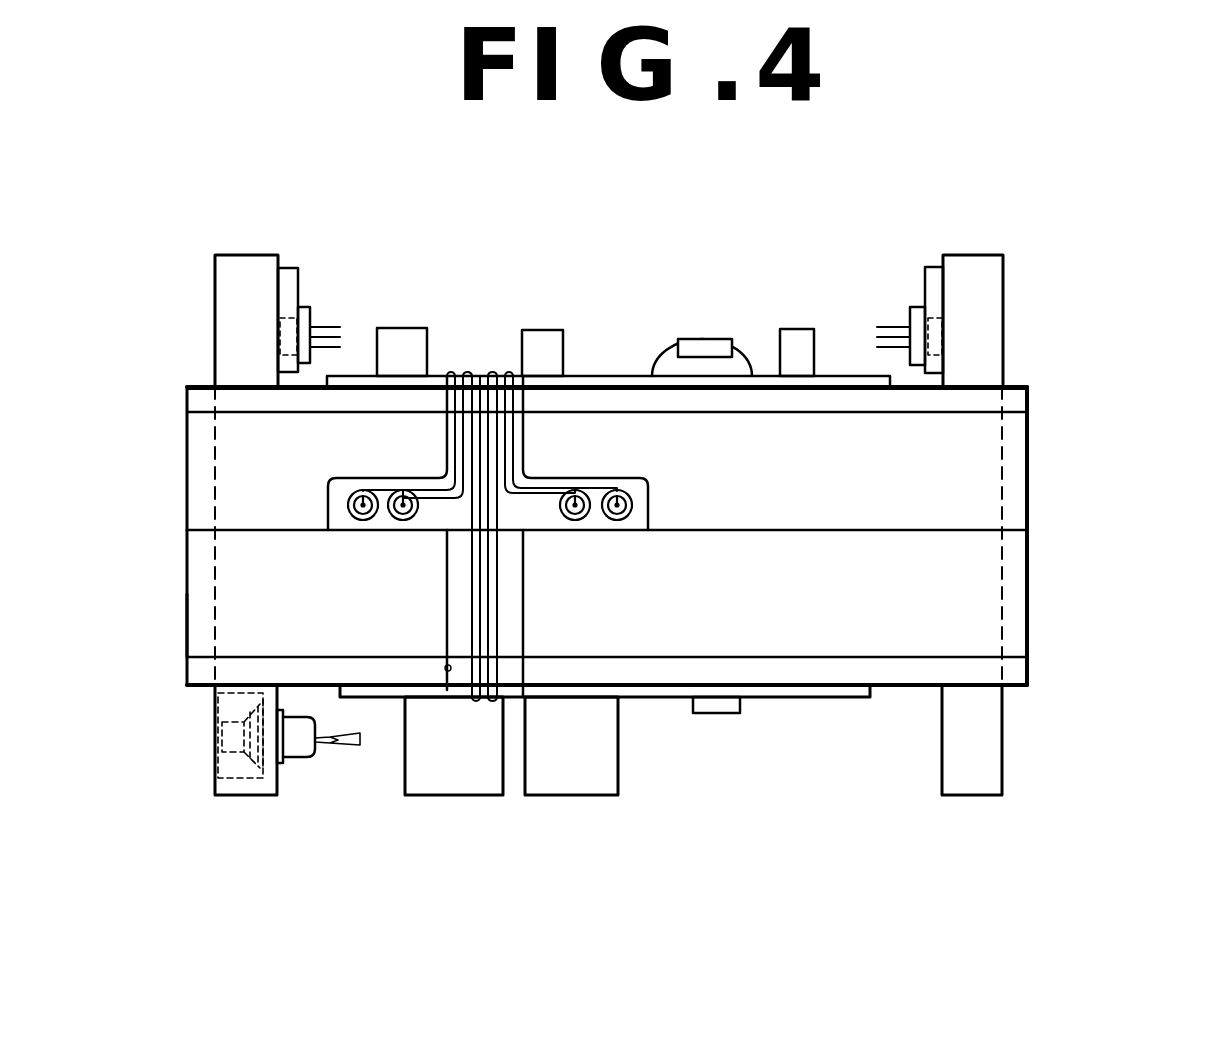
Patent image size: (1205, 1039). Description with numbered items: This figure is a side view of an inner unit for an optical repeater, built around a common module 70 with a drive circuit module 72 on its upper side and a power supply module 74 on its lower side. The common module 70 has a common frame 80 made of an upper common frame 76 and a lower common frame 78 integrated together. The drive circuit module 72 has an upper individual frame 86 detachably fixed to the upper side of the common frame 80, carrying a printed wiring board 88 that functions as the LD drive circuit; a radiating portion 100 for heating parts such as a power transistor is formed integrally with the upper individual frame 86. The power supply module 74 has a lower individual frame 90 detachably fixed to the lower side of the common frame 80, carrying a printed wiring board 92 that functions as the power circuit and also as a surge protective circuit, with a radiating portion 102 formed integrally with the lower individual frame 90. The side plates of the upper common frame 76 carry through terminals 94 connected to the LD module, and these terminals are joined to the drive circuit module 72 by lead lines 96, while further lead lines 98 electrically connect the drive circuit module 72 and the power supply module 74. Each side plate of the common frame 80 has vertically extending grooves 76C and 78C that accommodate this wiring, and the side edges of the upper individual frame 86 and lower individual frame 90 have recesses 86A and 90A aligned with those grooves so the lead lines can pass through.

The common module 70 is at (1078, 422).
The drive circuit module 72 is at (1040, 292).
The power supply module 74 is at (1045, 728).
The upper common frame 76 is at (985, 513).
The lower common frame 78 is at (985, 550).
The common frame 80 is at (1113, 488).
The upper individual frame 86 is at (1030, 392).
The recess 86A is at (447, 403).
The printed wiring board 88 is at (622, 375).
The lower individual frame 90 is at (907, 676).
The recess 90A is at (446, 672).
The printed wiring board 92 is at (672, 698).
The through terminals 94 is at (403, 520).
The lead lines 96 is at (499, 430).
The lead lines 98 is at (490, 642).
The radiating portion 100 is at (243, 288).
The radiating portion 102 is at (215, 793).
The groove 76C is at (443, 438).
The groove 78C is at (445, 612).